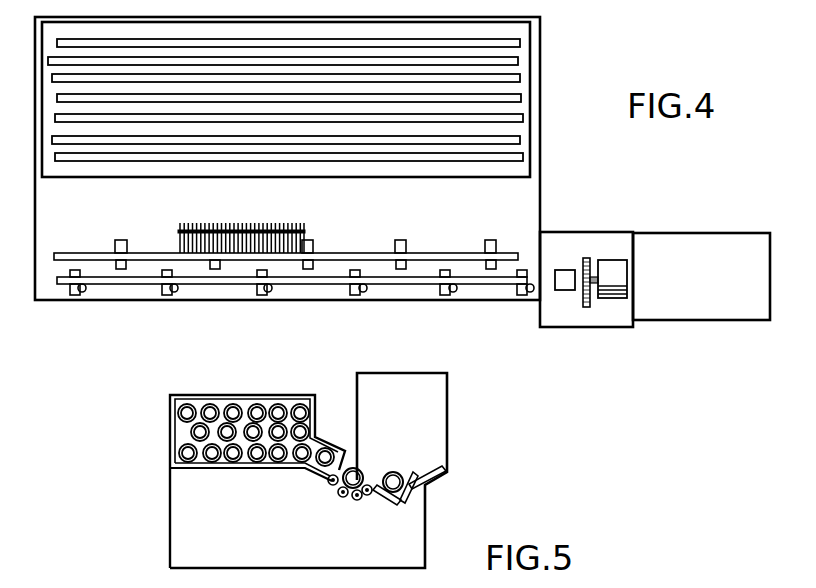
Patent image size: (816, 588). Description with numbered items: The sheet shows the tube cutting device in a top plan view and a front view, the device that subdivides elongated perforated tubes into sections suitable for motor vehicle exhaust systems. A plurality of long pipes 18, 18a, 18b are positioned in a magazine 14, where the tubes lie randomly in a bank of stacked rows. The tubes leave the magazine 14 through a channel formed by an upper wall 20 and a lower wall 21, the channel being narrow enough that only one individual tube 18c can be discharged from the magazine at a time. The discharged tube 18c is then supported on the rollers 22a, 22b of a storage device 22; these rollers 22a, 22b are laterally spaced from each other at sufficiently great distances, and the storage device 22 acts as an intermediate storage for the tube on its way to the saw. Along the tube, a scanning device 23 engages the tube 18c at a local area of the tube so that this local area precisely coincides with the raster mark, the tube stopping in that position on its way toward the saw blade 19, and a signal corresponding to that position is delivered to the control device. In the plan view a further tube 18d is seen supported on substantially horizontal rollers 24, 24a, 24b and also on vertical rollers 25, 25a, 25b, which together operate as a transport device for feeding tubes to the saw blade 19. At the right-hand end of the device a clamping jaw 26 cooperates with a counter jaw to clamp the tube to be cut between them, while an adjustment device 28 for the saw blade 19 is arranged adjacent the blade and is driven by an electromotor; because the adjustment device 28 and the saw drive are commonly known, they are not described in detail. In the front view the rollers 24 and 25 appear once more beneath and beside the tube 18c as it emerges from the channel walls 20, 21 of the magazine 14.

In FIG. 5, the magazine 14 is at (182, 432).
In FIG. 4, the long pipe 18 is at (510, 48).
In FIG. 4, the long pipe 18a is at (520, 82).
In FIG. 4, the long pipe 18b is at (520, 145).
In FIG. 4, the individual tube 18c is at (338, 255).
In FIG. 5, the individual tube 18c is at (355, 470).
In FIG. 4, the further tube 18d is at (325, 283).
In FIG. 4, the saw blade 19 is at (585, 302).
In FIG. 5, the upper wall 20 is at (323, 447).
In FIG. 5, the lower wall 21 is at (317, 480).
In FIG. 4, the storage device 22 is at (118, 240).
In FIG. 4, the roller 22a is at (308, 240).
In FIG. 4, the roller 22b is at (495, 240).
In FIG. 4, the scanning device 23 is at (227, 232).
In FIG. 4, the horizontal roller 24 is at (75, 295).
In FIG. 5, the horizontal roller 24 is at (385, 502).
In FIG. 4, the horizontal roller 24a is at (260, 295).
In FIG. 4, the horizontal roller 24b is at (448, 292).
In FIG. 4, the vertical roller 25 is at (183, 295).
In FIG. 5, the vertical roller 25 is at (446, 474).
In FIG. 4, the vertical roller 25a is at (365, 292).
In FIG. 4, the vertical roller 25b is at (530, 300).
In FIG. 4, the clamping jaw 26 is at (567, 268).
In FIG. 4, the adjustment device 28 is at (615, 290).